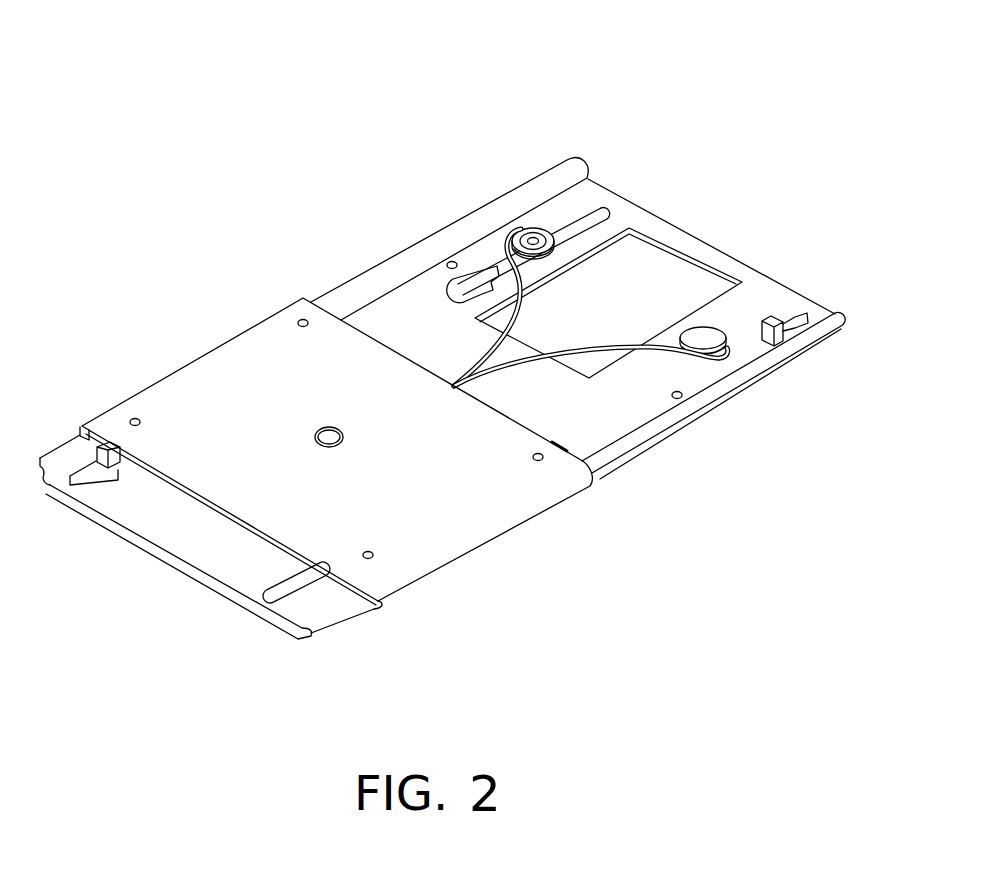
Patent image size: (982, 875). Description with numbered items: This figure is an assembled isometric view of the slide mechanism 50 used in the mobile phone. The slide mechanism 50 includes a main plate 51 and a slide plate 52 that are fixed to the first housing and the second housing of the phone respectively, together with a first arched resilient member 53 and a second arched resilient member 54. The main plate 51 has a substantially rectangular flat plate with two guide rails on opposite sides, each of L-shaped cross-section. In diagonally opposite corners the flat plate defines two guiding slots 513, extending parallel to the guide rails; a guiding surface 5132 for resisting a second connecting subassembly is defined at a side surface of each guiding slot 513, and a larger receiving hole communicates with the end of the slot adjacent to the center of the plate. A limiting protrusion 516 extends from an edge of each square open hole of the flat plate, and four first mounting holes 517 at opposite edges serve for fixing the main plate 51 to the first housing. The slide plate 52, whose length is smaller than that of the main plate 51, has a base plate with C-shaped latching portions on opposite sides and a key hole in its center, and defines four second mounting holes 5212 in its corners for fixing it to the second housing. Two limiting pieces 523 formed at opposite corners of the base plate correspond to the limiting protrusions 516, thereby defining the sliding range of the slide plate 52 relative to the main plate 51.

The slide mechanism 50 is at (396, 95).
The main plate 51 is at (222, 543).
The slide plate 52 is at (233, 372).
The first arched resilient member 53 is at (641, 352).
The second arched resilient member 54 is at (507, 253).
The guiding slot 513 is at (607, 212).
The guiding surface 5132 is at (572, 218).
The limiting protrusion 516 is at (107, 460).
The first mounting hole 517 is at (680, 397).
The limiting piece 523 is at (117, 443).
The second mounting hole 5212 is at (372, 558).